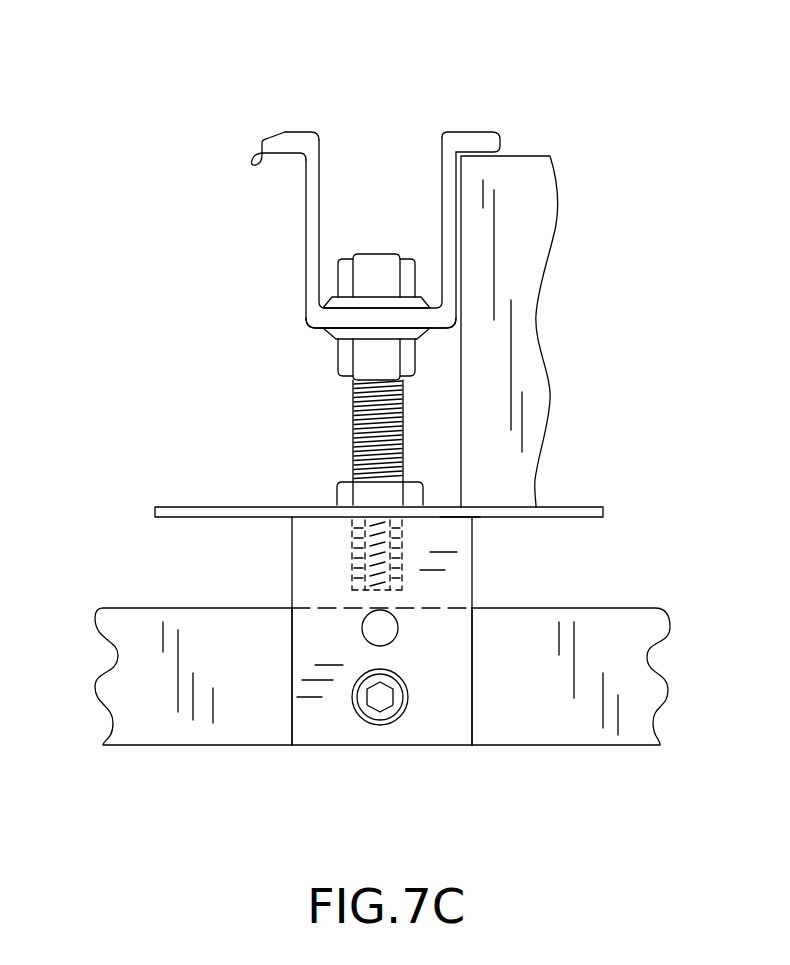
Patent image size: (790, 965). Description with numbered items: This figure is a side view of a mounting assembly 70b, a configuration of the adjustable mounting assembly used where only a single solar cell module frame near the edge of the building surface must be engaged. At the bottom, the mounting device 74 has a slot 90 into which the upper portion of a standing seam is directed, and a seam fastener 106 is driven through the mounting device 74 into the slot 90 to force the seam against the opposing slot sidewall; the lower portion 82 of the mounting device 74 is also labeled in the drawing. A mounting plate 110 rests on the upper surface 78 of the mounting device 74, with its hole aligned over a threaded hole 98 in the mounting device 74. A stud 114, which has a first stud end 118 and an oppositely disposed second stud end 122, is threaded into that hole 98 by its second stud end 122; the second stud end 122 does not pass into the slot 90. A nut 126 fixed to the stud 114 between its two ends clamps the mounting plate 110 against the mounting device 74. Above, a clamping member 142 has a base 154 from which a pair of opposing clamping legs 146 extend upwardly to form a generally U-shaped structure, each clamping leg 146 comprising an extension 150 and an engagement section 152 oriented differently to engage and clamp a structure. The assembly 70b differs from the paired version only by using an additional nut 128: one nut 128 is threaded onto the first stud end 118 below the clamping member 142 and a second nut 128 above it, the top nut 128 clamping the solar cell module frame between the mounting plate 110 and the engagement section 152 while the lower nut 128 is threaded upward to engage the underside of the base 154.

The mounting assembly 70b is at (190, 178).
The clamping legs 146 is at (293, 103).
The clamping member 142 is at (323, 138).
The engagement section 152 is at (250, 148).
The extension 150 is at (306, 255).
The base 154 is at (360, 317).
The nut 128 is at (339, 262).
The first stud end 118 is at (378, 255).
The stud 114 is at (352, 417).
The nut 126 is at (338, 500).
The mounting plate 110 is at (594, 506).
The upper surface 78 is at (446, 513).
The threaded hole 98 is at (352, 545).
The slot 90 is at (300, 612).
The second stud end 122 is at (393, 590).
The block body 82 is at (312, 727).
The seam fastener 106 is at (378, 704).
The mounting device 74 is at (455, 745).